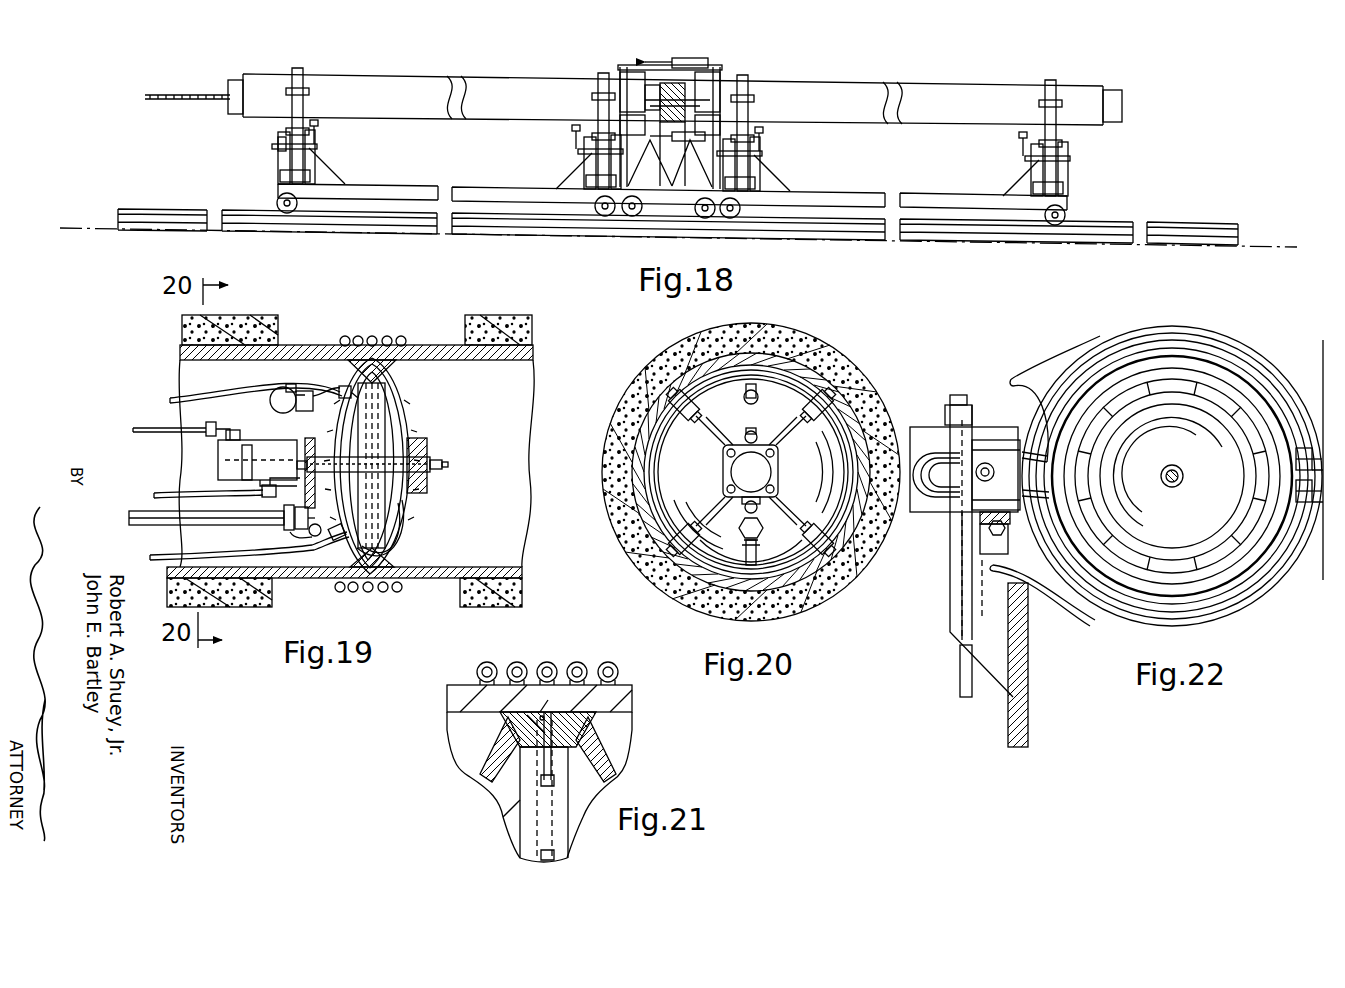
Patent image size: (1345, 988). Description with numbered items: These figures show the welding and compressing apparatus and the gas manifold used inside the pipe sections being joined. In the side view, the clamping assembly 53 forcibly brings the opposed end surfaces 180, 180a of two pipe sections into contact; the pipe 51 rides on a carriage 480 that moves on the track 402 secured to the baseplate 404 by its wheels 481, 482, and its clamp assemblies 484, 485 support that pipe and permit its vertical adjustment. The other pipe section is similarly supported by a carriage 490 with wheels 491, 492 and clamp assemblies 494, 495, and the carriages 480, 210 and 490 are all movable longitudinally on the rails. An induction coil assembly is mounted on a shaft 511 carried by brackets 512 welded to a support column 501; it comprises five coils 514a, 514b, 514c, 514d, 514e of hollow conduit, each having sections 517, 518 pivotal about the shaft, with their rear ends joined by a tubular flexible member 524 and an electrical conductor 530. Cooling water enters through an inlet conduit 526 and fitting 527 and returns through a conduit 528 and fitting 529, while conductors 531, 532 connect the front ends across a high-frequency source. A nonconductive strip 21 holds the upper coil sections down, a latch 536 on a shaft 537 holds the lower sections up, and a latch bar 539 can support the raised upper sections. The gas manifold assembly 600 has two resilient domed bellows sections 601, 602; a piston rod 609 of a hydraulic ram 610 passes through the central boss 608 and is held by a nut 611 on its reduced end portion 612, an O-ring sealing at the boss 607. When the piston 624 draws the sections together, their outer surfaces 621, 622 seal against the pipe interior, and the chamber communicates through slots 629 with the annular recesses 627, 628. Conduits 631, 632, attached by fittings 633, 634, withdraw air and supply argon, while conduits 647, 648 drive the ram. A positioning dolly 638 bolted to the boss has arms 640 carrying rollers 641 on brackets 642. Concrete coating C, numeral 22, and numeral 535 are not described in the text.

In FIG. 18, the pipe 51 is at (496, 73).
In FIG. 18, the clamping assembly 53 is at (713, 63).
In FIG. 18, the clamp assembly 484 is at (342, 163).
In FIG. 18, the clamp assembly 485 is at (567, 159).
In FIG. 18, the clamp assembly 494 is at (782, 165).
In FIG. 18, the clamp assembly 495 is at (1070, 166).
In FIG. 18, the carriage 480 is at (431, 176).
In FIG. 18, the carriage 490 is at (930, 182).
In FIG. 18, the wheel 481 is at (292, 214).
In FIG. 18, the wheel 482 is at (598, 218).
In FIG. 18, the wheel 491 is at (738, 222).
In FIG. 18, the wheel 492 is at (1047, 226).
In FIG. 18, the carriage 210 is at (680, 206).
In FIG. 18, the track 402 is at (806, 227).
In FIG. 18, the baseplate 404 is at (868, 237).
In FIG. 19, the concrete coating C is at (273, 323).
In FIG. 22, the concrete coating C is at (1218, 346).
In FIG. 19, the pipe wall 22 is at (316, 345).
In FIG. 19, the nonconductive strip 21 is at (440, 341).
In FIG. 19, the coil 514a is at (404, 336).
In FIG. 21, the coil 514a is at (628, 649).
In FIG. 21, the coil 514b is at (586, 649).
In FIG. 21, the coil 514c is at (547, 662).
In FIG. 22, the coil 514c is at (1172, 353).
In FIG. 21, the coil 514d is at (512, 662).
In FIG. 19, the coil 514e is at (347, 336).
In FIG. 21, the coil 514e is at (477, 672).
In FIG. 19, the outer external surface 622 is at (344, 592).
In FIG. 19, the outer external surface 621 is at (399, 592).
In FIG. 19, the gas manifold assembly 600 is at (416, 411).
In FIG. 19, the manifold section 601 is at (413, 424).
In FIG. 22, the manifold section 601 is at (1195, 534).
In FIG. 19, the fitting 633 is at (383, 394).
In FIG. 19, the manifold section 602 is at (344, 385).
In FIG. 19, the nut 611 is at (444, 470).
In FIG. 19, the reduced end portion 612 is at (443, 469).
In FIG. 19, the boss 607 is at (421, 497).
In FIG. 19, the central boss 608 is at (315, 446).
In FIG. 19, the piston rod 609 is at (405, 513).
In FIG. 22, the piston rod 609 is at (1165, 483).
In FIG. 19, the hydraulic ram 610 is at (214, 460).
In FIG. 19, the piston 624 is at (248, 445).
In FIG. 19, the pipe engaging roller 641 is at (270, 403).
In FIG. 20, the pipe engaging roller 641 is at (720, 413).
In FIG. 19, the flexible conduit 631 is at (200, 400).
In FIG. 19, the flexible conduit 648 is at (150, 430).
In FIG. 19, the flexible conduit 647 is at (156, 493).
In FIG. 19, the flexible conduit 632 is at (150, 516).
In FIG. 19, the fitting 634 is at (340, 545).
In FIG. 20, the positioning dolly 638 is at (719, 474).
In FIG. 20, the arm 640 is at (714, 441).
In FIG. 20, the bracket 642 is at (707, 394).
In FIG. 21, the end surface 180 is at (570, 702).
In FIG. 21, the end surface 180a is at (540, 692).
In FIG. 22, the end surface 180a is at (1223, 386).
In FIG. 21, the external annular recess 628 is at (536, 725).
In FIG. 21, the external annular recess 627 is at (578, 720).
In FIG. 21, the slot 629 is at (504, 802).
In FIG. 22, the coil section 518 is at (1222, 596).
In FIG. 22, the coil section 517 is at (1275, 402).
In FIG. 22, the fitting 529 is at (1298, 462).
In FIG. 22, the fitting 527 is at (1298, 500).
In FIG. 22, the conductor 531 is at (1323, 345).
In FIG. 22, the conductor 532 is at (1323, 548).
In FIG. 22, the return flexible conduit 528 is at (1055, 399).
In FIG. 22, the latch bar 539 is at (1010, 380).
In FIG. 22, the flexible inlet conduit 526 is at (1050, 582).
In FIG. 22, the flexible electrical conductor 530 is at (925, 428).
In FIG. 22, the bracket 512 is at (950, 626).
In FIG. 22, the shaft 511 is at (990, 462).
In FIG. 22, the block 535 is at (1033, 452).
In FIG. 22, the tubular flexible member 524 is at (985, 513).
In FIG. 22, the latch 536 is at (990, 530).
In FIG. 22, the shaft 537 is at (982, 567).
In FIG. 22, the support column 501 is at (1043, 703).